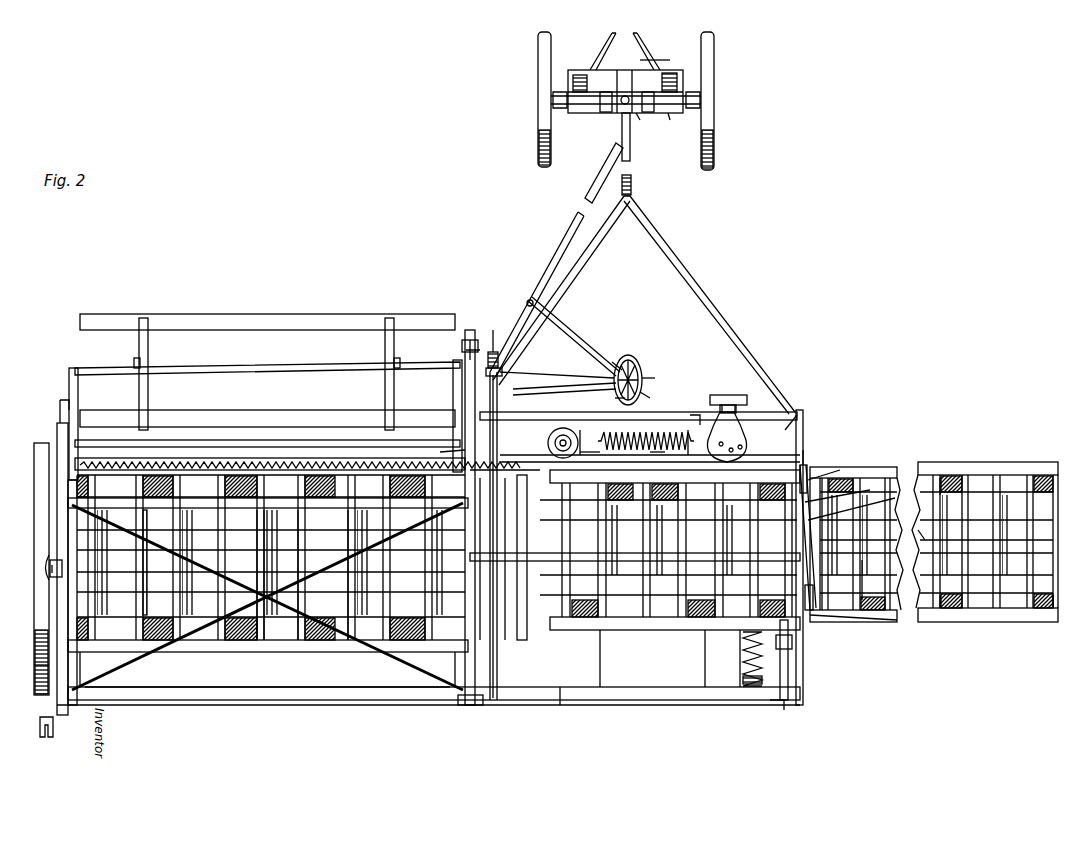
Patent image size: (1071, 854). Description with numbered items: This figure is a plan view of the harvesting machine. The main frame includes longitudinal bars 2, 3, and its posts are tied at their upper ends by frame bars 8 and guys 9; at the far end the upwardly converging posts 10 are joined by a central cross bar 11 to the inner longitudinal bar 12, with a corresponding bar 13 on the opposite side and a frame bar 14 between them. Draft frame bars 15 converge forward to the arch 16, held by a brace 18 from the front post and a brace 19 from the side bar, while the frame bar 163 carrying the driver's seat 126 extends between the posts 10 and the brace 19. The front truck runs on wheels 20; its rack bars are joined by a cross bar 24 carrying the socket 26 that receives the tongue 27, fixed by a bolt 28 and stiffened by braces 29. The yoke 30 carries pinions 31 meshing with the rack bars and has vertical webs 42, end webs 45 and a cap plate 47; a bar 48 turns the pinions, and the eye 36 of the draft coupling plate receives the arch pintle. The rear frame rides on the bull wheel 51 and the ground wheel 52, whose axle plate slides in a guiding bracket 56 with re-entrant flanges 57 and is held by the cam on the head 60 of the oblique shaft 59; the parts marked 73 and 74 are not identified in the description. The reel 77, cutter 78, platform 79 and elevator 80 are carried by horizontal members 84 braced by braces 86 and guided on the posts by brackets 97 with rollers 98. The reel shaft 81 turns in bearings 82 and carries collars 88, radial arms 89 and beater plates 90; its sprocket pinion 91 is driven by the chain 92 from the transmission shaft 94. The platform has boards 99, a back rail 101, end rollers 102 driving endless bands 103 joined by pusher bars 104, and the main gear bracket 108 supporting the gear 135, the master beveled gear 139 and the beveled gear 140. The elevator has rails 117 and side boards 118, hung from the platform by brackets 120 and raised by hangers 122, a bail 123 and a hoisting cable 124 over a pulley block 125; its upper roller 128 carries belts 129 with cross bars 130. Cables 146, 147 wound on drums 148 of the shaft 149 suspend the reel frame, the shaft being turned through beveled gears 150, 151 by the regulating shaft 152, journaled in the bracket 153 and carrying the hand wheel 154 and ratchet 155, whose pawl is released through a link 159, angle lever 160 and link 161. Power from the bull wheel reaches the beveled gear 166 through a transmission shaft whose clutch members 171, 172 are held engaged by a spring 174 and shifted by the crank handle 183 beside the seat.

The longitudinal bar 2 is at (596, 665).
The longitudinal bar 3 is at (702, 657).
The frame bars 8 is at (328, 700).
The guys 9 is at (136, 668).
The posts 10 is at (803, 440).
The central cross bar 11 is at (538, 575).
The inner longitudinal bar 12 is at (467, 590).
The bar 13 is at (62, 525).
The frame bar 14 is at (280, 515).
The draft frame bars 15 is at (575, 270).
The arch 16 is at (630, 152).
The brace 18 is at (548, 262).
The brace 19 is at (714, 392).
The wheels 20 is at (538, 145).
The bridge piece or cross bar 24 is at (604, 112).
The socket or bracket 26 is at (620, 116).
The tongue or pole 27 is at (630, 50).
The bolt 28 is at (624, 95).
The braces 29 is at (606, 38).
The yoke or coupling head 30 is at (596, 78).
The pinions 31 is at (551, 100).
The eye 36 is at (612, 135).
The vertical webs 42 is at (672, 72).
The end webs 45 is at (568, 77).
The back plate or cap plate 47 is at (670, 120).
The bar 48 is at (640, 120).
The driving or bull wheel 51 is at (755, 684).
The ground wheel 52 is at (34, 646).
The guiding bracket 56 is at (50, 560).
The re-entrant flanges 57 is at (50, 570).
The shaft 59 is at (36, 668).
The head 60 is at (59, 732).
The lever 73 is at (786, 708).
The link 74 is at (806, 638).
The reel 77 is at (268, 357).
The cutter 78 is at (160, 462).
The platform 79 is at (271, 542).
The elevator 80 is at (898, 452).
The shaft 81 is at (230, 357).
The bearings 82 is at (470, 342).
The horizontal members 84 is at (69, 372).
The braces 86 is at (80, 667).
The collars or hub members 88 is at (134, 362).
The radial arms 89 is at (148, 350).
The blades or beater plates 90 is at (350, 312).
The sprocket pinion 91 is at (495, 352).
The sprocket chain 92 is at (453, 392).
The transmission shaft 94 is at (441, 453).
The brackets 97 is at (60, 412).
The rollers 98 is at (57, 433).
The boards 99 is at (278, 650).
The back rail 101 is at (220, 652).
The rollers 102 is at (82, 595).
The endless bands 103 is at (318, 508).
The cleats or pusher bars 104 is at (364, 575).
The casting or main supporting bracket 108 is at (562, 428).
The rails 117 is at (915, 620).
The side boards or wings 118 is at (1000, 458).
The brackets 120 is at (600, 650).
The brackets or hangers 122 is at (812, 470).
The bail 123 is at (867, 507).
The hoisting cable 124 is at (820, 482).
The pulley block 125 is at (847, 580).
The driver's seat 126 is at (745, 418).
The roller 128 is at (1045, 622).
The endless belts or bands 129 is at (1020, 480).
The cleats or cross bars 130 is at (932, 538).
The gear 135 is at (600, 455).
The master beveled gear 139 is at (580, 428).
The beveled gear 140 is at (511, 487).
The cable 146 is at (305, 445).
The cable 147 is at (470, 706).
The drums 148 is at (512, 370).
The shaft 149 is at (508, 525).
The beveled gear 150 is at (493, 352).
The beveled gear 151 is at (500, 376).
The regulating shaft 152 is at (604, 380).
The bracket and bracing member 153 is at (565, 322).
The hand wheel 154 is at (636, 358).
The ratchet 155 is at (637, 360).
The link 159 is at (618, 400).
The angle lever 160 is at (641, 380).
The link 161 is at (641, 400).
The frame bar 163 is at (800, 425).
The beveled gear 166 is at (628, 448).
The clutch member 171 is at (714, 400).
The mating clutch member 172 is at (688, 452).
The spring 174 is at (656, 452).
The crank handle 183 is at (692, 412).